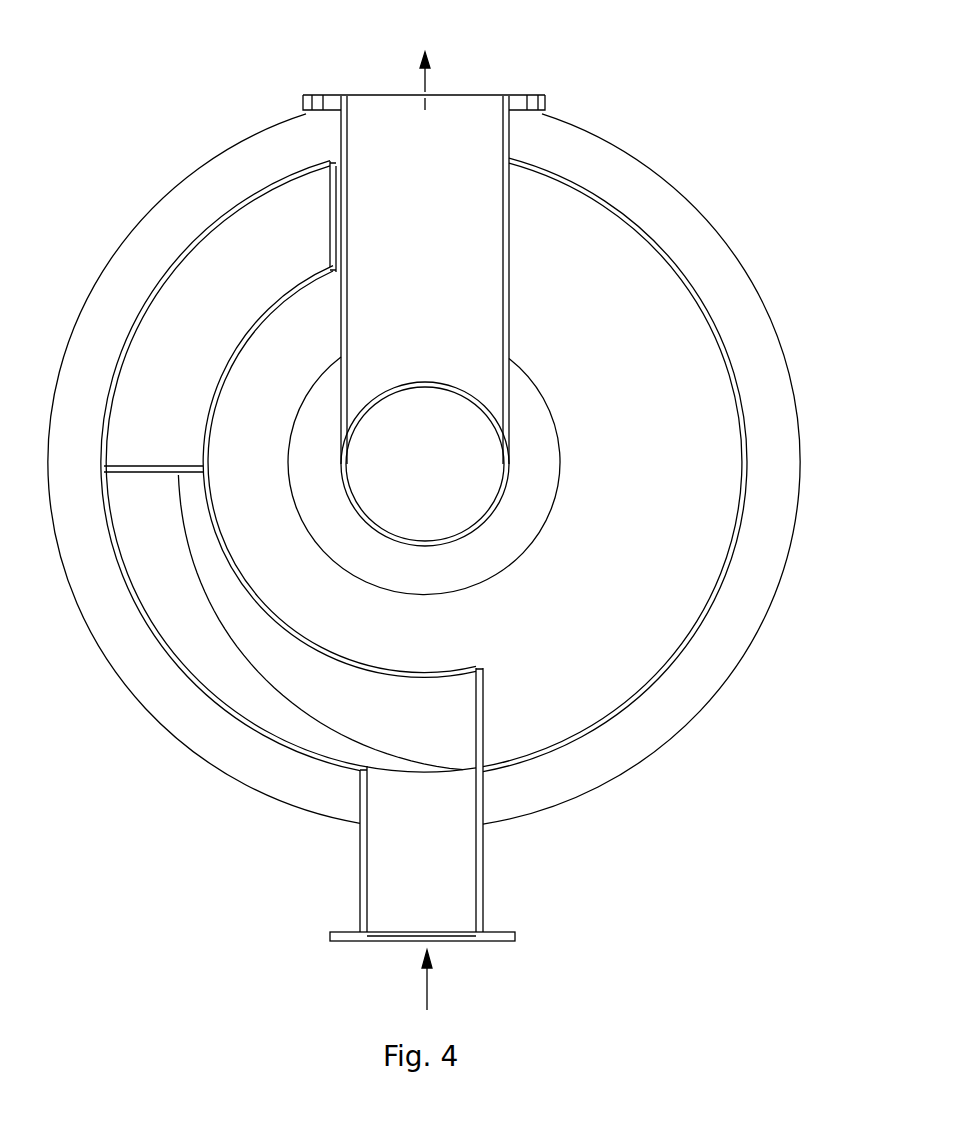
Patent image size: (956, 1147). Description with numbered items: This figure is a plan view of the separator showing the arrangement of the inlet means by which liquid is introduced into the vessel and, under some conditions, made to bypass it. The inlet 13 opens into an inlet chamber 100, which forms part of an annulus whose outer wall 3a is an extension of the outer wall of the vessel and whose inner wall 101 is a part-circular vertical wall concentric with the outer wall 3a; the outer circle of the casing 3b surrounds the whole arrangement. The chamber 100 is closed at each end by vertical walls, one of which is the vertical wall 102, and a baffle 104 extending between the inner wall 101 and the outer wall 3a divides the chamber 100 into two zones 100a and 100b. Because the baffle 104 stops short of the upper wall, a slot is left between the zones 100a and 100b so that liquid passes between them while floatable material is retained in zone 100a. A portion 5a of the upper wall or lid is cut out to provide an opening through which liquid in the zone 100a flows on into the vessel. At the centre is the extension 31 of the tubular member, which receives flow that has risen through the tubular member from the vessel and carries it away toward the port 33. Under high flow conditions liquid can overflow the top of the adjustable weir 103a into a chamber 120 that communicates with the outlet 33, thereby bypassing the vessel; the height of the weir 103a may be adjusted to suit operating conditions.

The outer wall 3a is at (237, 710).
The outer casing wall 3b is at (730, 680).
The cut-out portion of upper wall 5a is at (253, 700).
The inlet 13 is at (515, 876).
The extension of tubular member 31 is at (445, 479).
The port 33 is at (466, 126).
The inlet chamber 100 is at (176, 439).
The zone 100a is at (343, 708).
The zone 100b is at (198, 337).
The inner wall 101 is at (227, 577).
The vertical wall 102 is at (480, 723).
The adjustable extension 103a is at (328, 217).
The baffle 104 is at (147, 473).
The chamber 120 is at (455, 313).